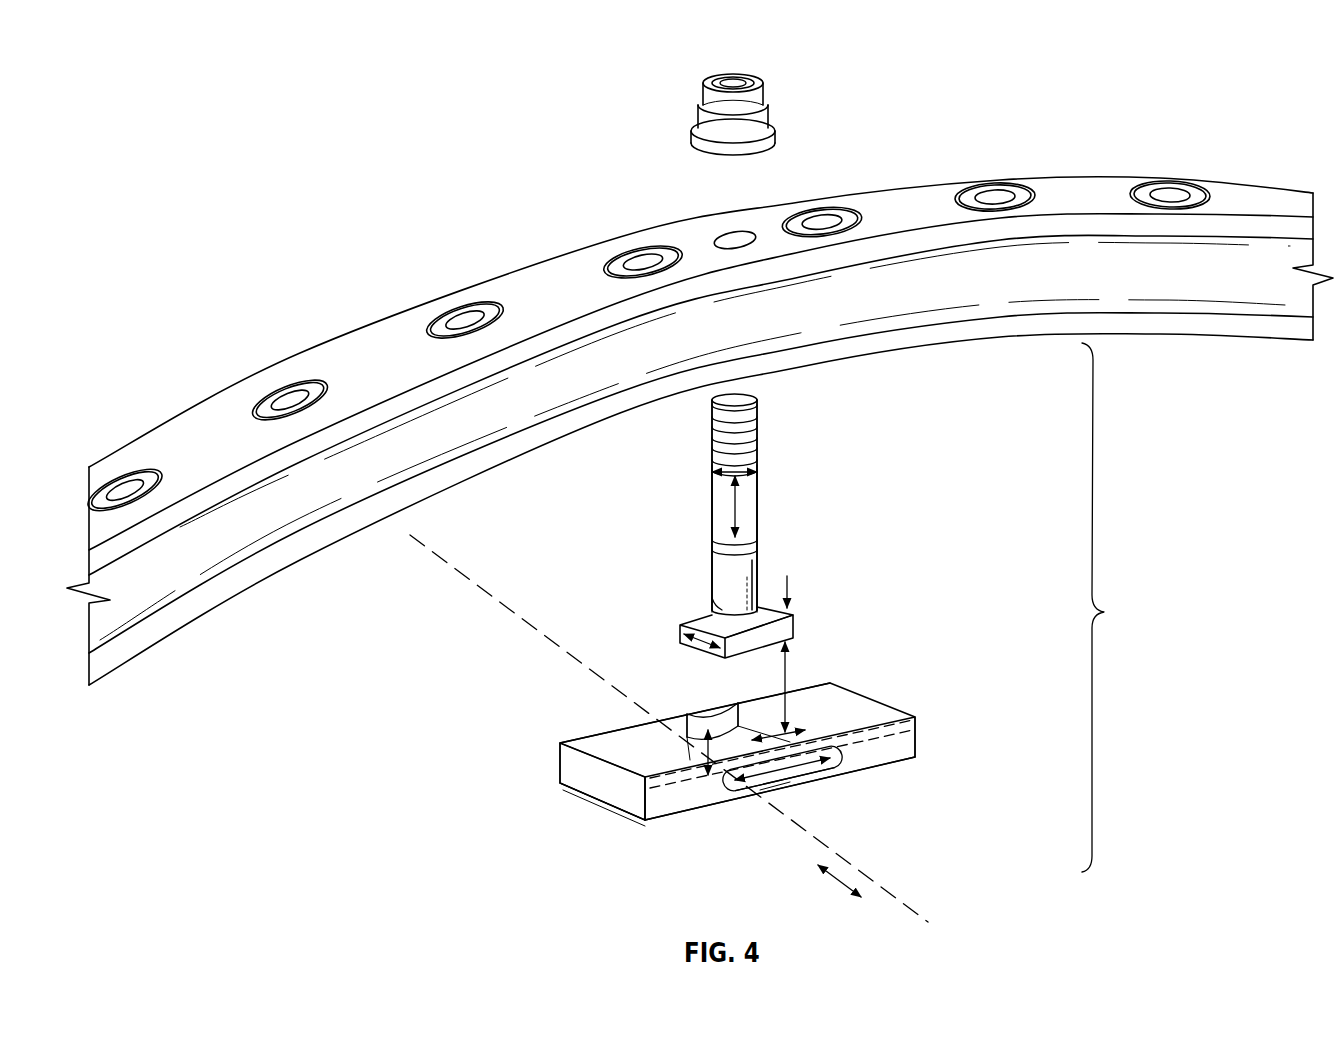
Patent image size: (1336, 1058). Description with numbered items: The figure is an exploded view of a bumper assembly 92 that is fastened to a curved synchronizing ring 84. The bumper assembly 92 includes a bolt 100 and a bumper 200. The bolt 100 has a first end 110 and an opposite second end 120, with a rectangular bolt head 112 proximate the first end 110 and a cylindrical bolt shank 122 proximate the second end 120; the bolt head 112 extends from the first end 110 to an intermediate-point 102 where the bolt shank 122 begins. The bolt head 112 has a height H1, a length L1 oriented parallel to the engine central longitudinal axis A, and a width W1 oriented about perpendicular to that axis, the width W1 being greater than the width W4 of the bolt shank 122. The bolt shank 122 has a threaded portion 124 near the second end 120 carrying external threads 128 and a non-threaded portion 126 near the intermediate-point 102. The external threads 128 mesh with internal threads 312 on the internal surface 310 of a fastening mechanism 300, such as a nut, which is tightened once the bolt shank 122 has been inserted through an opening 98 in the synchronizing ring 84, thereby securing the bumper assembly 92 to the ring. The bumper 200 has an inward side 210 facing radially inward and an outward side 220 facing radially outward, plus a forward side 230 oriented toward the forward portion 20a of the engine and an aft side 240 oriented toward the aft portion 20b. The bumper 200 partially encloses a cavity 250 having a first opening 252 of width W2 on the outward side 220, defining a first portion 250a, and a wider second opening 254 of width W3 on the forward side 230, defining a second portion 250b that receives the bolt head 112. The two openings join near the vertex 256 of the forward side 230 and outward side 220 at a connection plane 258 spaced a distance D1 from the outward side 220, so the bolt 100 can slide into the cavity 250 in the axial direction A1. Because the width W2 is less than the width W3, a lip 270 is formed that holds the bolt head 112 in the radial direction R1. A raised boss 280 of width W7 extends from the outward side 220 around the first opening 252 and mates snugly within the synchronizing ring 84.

The synchronizing ring 84 is at (920, 203).
The opening 98 is at (737, 232).
The fastening mechanism 300 is at (760, 119).
The internal surface 310 is at (743, 76).
The internal threads 312 is at (726, 76).
The bolt 100 is at (776, 528).
The second end 120 is at (757, 402).
The external threads 128 is at (757, 433).
The threaded portion 124 is at (660, 412).
The bolt shank 122 is at (760, 526).
The unthreaded portion 126 is at (638, 465).
The intermediate-point 102 is at (722, 608).
The first end 110 is at (712, 650).
The bolt head 112 is at (796, 630).
The bumper 200 is at (773, 747).
The inward side 210 is at (868, 800).
The outward side 220 is at (847, 690).
The forward side 230 is at (915, 760).
The aft side 240 is at (578, 740).
The cavity 250 is at (760, 792).
The first portion of the cavity 250a is at (918, 740).
The second portion of the cavity 250b is at (876, 788).
The first opening 252 is at (792, 725).
The second opening 254 is at (790, 800).
The vertex 256 is at (650, 822).
The connection plane 258 is at (642, 815).
The lip 270 is at (817, 722).
The raised boss 280 is at (781, 715).
The bumper assembly 92 is at (1112, 607).
The forward portion 20a is at (1103, 906).
The aft portion 20b is at (375, 618).
The engine central longitudinal axis A is at (912, 908).
The axial direction A1 is at (840, 882).
The width of the bolt head W1 is at (788, 598).
The width of the first opening W2 is at (810, 695).
The width of the second opening W3 is at (822, 778).
The width of the bolt shank W4 is at (720, 455).
The width of the raised boss W7 is at (686, 714).
The height of the bolt head H1 is at (790, 602).
The length of the bolt head L1 is at (695, 628).
The radial direction R1 is at (742, 506).
The distance D1 is at (708, 780).